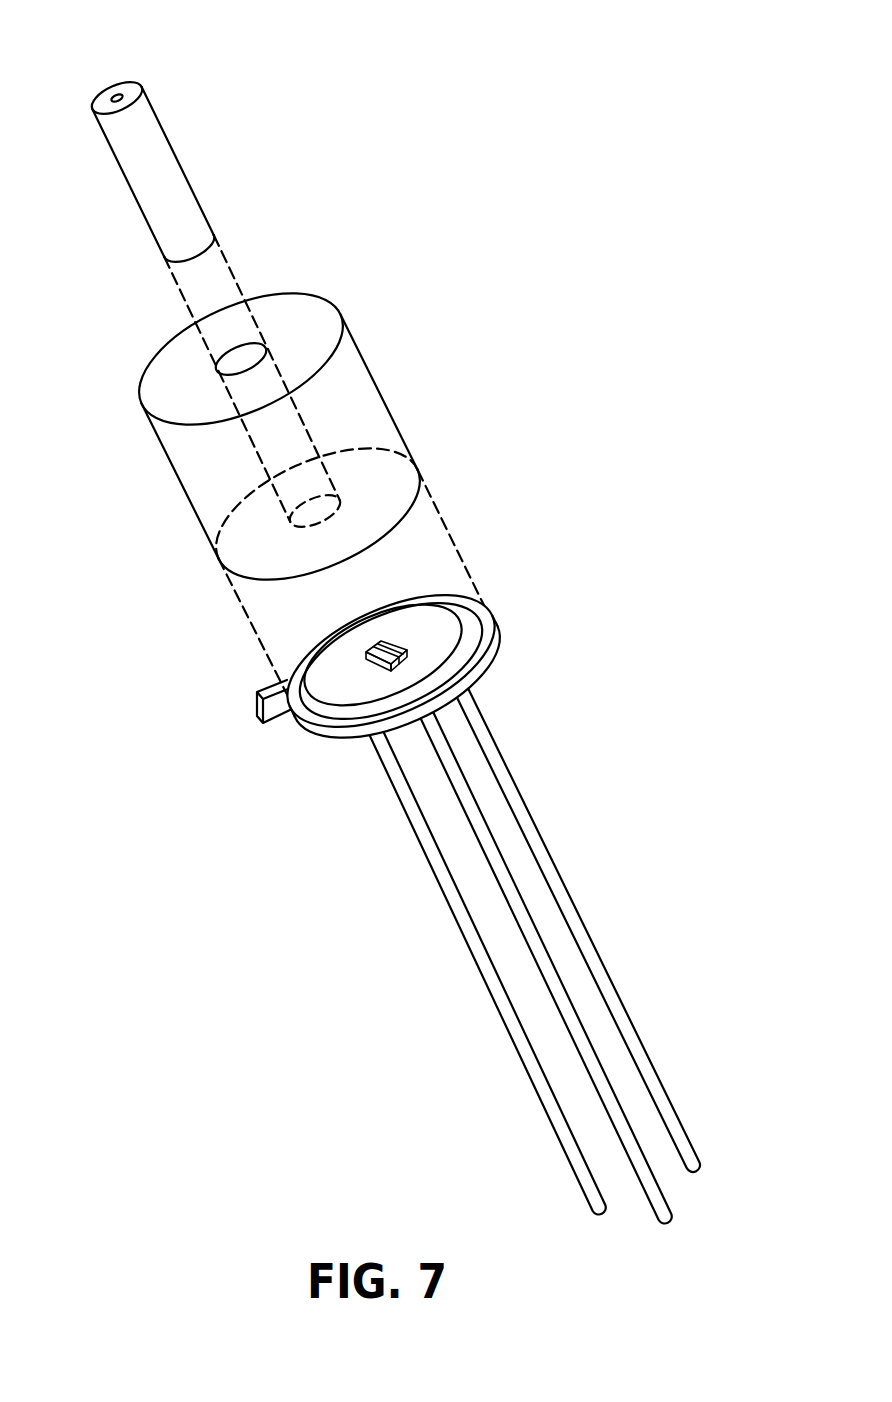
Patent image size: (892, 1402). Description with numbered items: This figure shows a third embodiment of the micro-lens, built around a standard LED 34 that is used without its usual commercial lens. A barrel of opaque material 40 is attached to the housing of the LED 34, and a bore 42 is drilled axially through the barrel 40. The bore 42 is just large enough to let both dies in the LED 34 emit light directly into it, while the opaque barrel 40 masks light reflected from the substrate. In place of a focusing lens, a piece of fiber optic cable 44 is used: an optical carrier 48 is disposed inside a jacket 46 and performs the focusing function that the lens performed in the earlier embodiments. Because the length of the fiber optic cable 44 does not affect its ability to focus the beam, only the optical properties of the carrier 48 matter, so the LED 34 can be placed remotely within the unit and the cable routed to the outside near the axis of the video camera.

The LED 34 is at (340, 743).
The barrel of opaque material 40 is at (363, 437).
The bore 42 is at (293, 445).
The fiber optic cable 44 is at (217, 266).
The jacket 46 is at (148, 142).
The optical carrier 48 is at (114, 98).